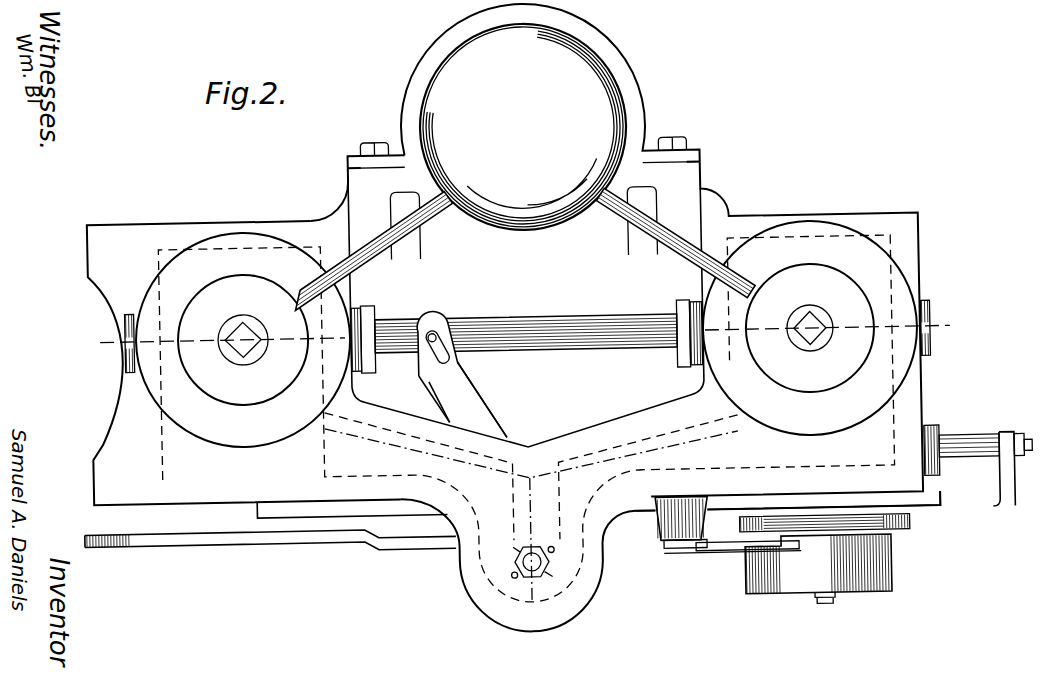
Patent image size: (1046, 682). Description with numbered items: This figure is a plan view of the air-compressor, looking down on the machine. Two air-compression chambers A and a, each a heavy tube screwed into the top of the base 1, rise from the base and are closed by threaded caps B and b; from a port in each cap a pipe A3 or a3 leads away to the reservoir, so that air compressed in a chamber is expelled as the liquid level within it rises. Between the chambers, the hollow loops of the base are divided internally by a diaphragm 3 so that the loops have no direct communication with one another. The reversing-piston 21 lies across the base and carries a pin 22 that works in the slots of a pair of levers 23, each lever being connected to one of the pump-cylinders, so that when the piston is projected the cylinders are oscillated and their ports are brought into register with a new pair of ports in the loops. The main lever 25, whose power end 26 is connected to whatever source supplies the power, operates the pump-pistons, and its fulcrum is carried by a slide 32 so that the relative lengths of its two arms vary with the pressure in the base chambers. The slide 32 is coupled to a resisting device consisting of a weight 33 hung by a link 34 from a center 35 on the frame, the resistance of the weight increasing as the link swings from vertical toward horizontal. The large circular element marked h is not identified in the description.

The base 1 is at (958, 451).
The diaphragm 3 is at (565, 497).
The reversing-piston 21 is at (527, 321).
The pin 22 is at (438, 331).
The levers 23 is at (473, 399).
The main lever 25 is at (272, 541).
The power end 26 is at (108, 542).
The slide 32 is at (771, 510).
The weight 33 is at (826, 559).
The link 34 is at (728, 555).
The center 35 is at (683, 546).
The pulley h is at (523, 127).
The air-compression chamber a is at (243, 340).
The cap b is at (243, 340).
The air-compression chamber A is at (810, 328).
The cap B is at (810, 328).
The pipe a3 is at (413, 232).
The pipe A3 is at (650, 235).